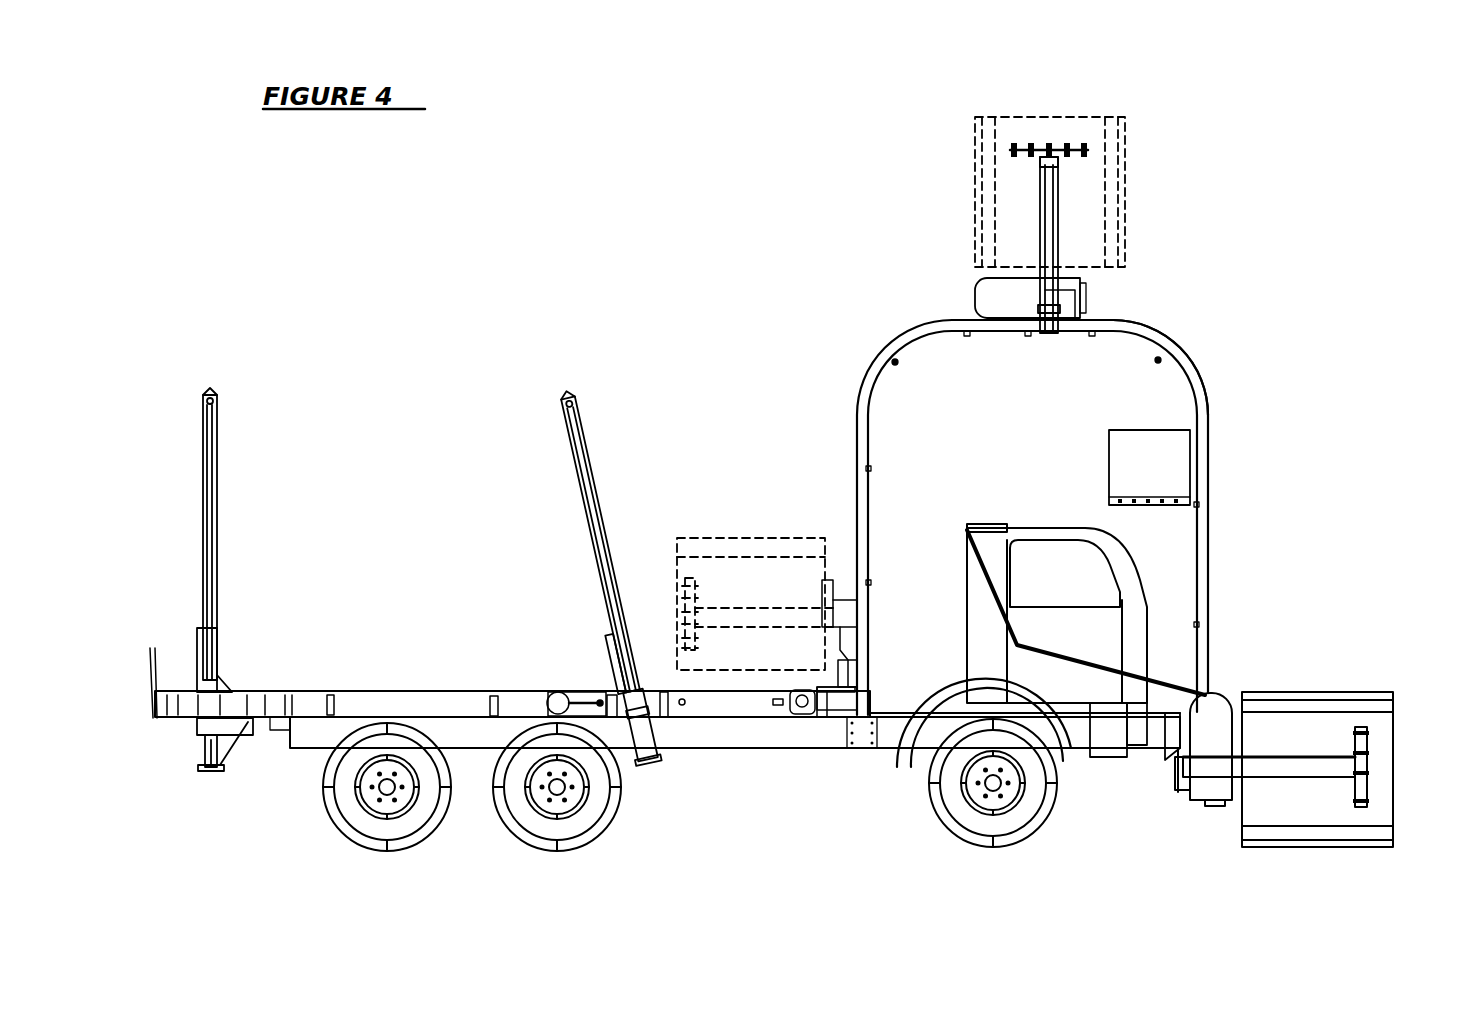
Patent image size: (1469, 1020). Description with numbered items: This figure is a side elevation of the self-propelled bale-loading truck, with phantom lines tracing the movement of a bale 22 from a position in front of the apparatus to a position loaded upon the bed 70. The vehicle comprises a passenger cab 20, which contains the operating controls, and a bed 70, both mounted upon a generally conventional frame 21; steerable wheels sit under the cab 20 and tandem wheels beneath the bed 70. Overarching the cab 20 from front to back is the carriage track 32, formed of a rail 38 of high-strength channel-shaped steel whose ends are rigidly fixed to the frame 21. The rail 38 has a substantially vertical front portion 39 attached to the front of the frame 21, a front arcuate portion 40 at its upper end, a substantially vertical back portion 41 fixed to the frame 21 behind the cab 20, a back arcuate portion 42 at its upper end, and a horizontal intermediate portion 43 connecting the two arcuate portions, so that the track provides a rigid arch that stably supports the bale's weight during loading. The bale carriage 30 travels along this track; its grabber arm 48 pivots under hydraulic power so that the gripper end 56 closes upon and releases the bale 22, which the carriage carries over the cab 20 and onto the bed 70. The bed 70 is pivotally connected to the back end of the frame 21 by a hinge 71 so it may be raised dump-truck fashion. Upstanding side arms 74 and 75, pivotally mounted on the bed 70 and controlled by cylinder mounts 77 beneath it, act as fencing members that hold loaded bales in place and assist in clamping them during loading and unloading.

The passenger cab 20 is at (1024, 528).
The frame 21 is at (1143, 735).
The bale 22 is at (1090, 133).
The bale carriage 30 is at (1202, 812).
The carriage track 32 is at (1030, 486).
The rail 38 is at (1208, 400).
The front portion 39 is at (1200, 545).
The front arcuate portion 40 is at (1160, 342).
The back portion 41 is at (857, 483).
The back arcuate portion 42 is at (893, 358).
The intermediate portion 43 is at (1005, 330).
The grabber arm 48 is at (1050, 200).
The gripper end 56 is at (1368, 791).
The bed 70 is at (397, 692).
The hinge 71 is at (282, 722).
The side arm 74 is at (580, 433).
The side arm 75 is at (214, 427).
The cylinder mount 77 is at (205, 728).